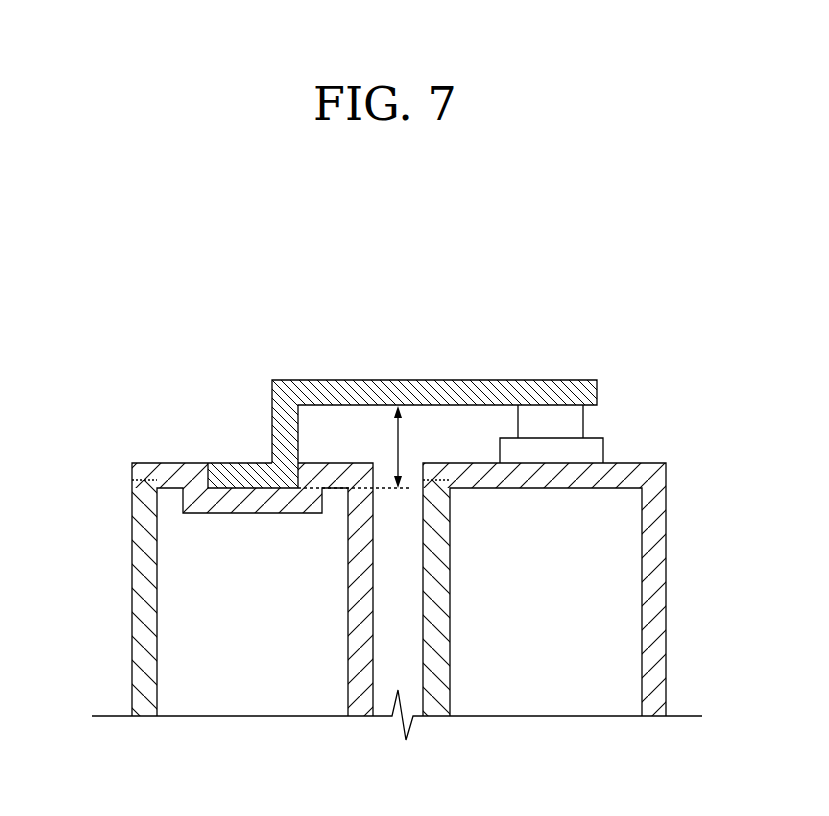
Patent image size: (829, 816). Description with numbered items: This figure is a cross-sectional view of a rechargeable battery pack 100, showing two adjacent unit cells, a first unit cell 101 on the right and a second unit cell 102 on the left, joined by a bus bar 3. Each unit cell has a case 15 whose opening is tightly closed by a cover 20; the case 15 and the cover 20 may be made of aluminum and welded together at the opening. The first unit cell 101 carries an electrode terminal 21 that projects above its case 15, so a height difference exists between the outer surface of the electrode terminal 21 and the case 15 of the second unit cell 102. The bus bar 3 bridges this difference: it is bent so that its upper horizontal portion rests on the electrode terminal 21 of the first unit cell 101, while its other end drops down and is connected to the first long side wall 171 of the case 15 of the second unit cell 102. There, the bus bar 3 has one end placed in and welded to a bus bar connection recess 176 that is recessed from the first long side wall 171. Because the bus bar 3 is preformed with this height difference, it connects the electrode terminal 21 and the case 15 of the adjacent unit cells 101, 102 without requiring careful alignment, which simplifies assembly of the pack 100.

The rechargeable battery pack 100 is at (398, 285).
The bus bar 3 is at (373, 393).
The electrode terminal 21 is at (553, 420).
The first long side wall 171 is at (173, 470).
The bus bar connection recess 176 is at (225, 472).
The first unit cell 101 is at (667, 583).
The second unit cell 102 is at (132, 585).
The cover 20 is at (140, 637).
The case 15 is at (655, 638).